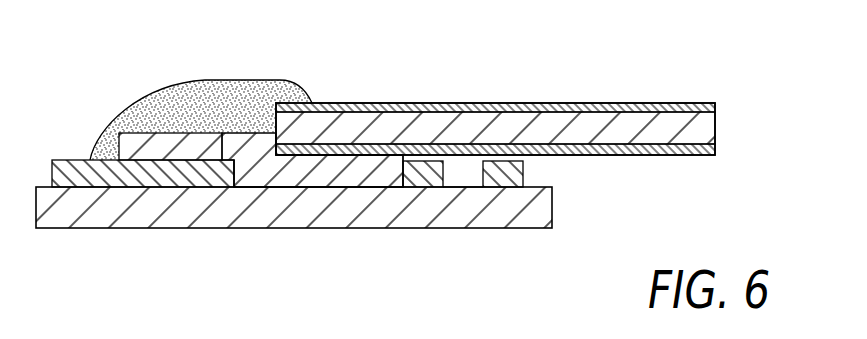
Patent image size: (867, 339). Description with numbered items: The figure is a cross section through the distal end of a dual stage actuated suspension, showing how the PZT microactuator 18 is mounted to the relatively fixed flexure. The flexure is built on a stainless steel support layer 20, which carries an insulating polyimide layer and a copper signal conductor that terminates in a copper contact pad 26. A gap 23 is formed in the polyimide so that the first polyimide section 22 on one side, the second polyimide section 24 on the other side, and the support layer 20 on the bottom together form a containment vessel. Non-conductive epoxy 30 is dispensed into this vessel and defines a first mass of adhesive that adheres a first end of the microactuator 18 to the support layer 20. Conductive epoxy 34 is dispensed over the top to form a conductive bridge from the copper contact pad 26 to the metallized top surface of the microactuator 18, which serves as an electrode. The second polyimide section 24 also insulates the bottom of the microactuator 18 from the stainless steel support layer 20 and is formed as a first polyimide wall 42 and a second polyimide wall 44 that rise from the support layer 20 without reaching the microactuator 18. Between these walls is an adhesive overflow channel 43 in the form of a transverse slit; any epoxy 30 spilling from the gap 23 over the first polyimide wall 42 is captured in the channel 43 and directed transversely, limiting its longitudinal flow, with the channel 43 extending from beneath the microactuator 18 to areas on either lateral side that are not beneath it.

The PZT 18 is at (322, 127).
The support layer 20 is at (473, 210).
The first polyimide section 22 is at (97, 172).
The gap 23 is at (275, 168).
The second polyimide section 24 is at (562, 176).
The copper contact pad 26 is at (138, 145).
The non-conductive epoxy 30 is at (303, 170).
The conductive epoxy 34 is at (228, 98).
The first polyimide wall 42 is at (418, 173).
The adhesive overflow channel 43 is at (462, 172).
The second polyimide wall 44 is at (503, 172).